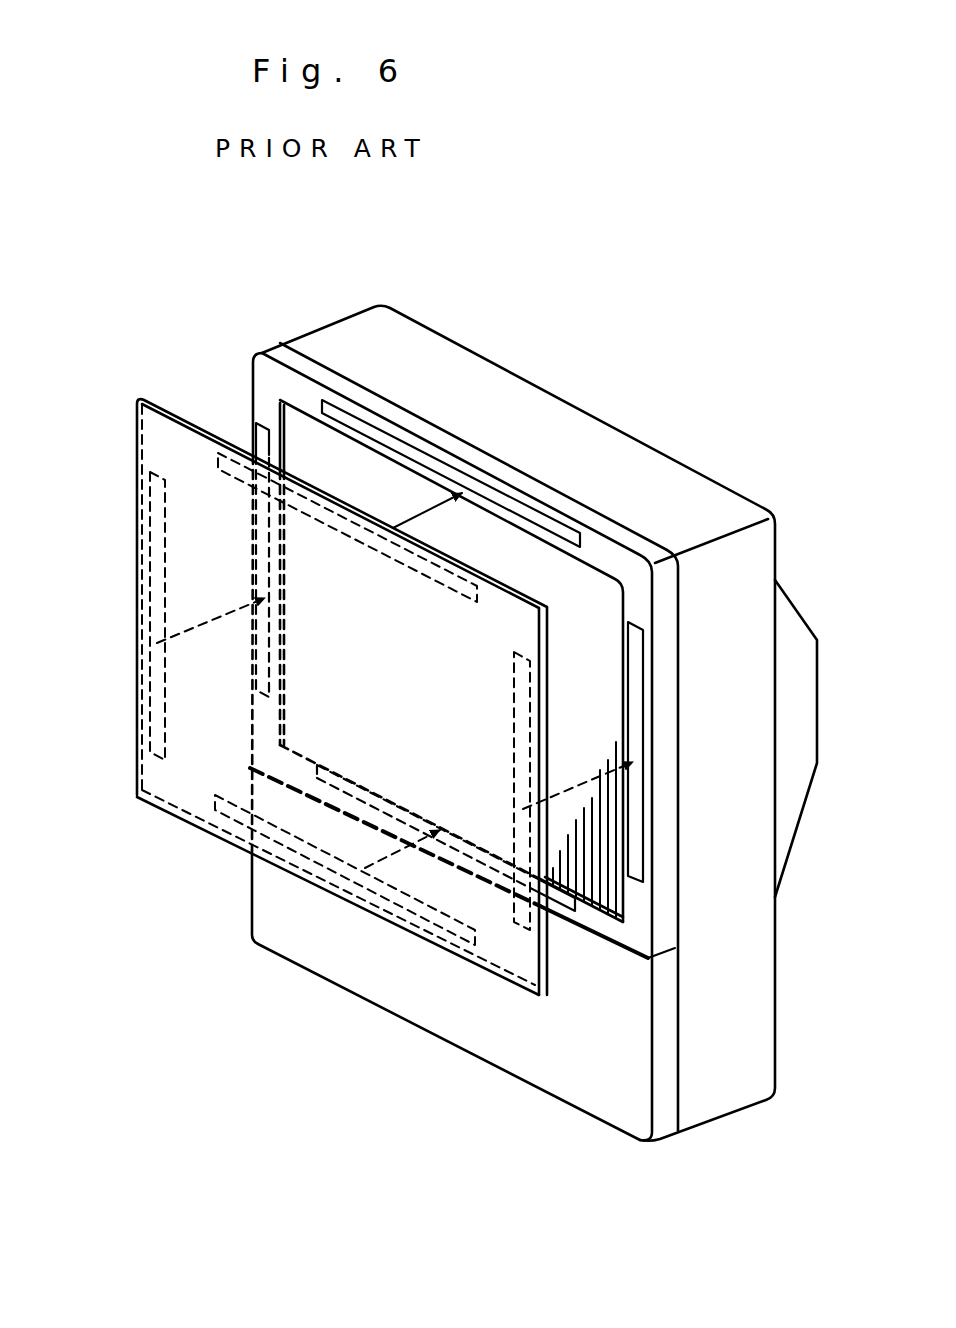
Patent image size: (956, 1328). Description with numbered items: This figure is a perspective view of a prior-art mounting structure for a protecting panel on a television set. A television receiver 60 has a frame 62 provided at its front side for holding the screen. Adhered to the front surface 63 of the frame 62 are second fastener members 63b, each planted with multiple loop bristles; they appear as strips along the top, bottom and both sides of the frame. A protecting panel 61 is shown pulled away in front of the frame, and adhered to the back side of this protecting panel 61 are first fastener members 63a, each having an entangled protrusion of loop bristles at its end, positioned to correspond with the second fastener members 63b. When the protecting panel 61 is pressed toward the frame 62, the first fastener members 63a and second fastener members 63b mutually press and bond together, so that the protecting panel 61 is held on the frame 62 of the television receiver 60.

The television receiver 60 is at (453, 367).
The protecting panel 61 is at (157, 432).
The frame 62 is at (283, 358).
The front surface 63 is at (613, 568).
The first fastener member 63a is at (157, 533).
The second fastener member 63b is at (255, 422).